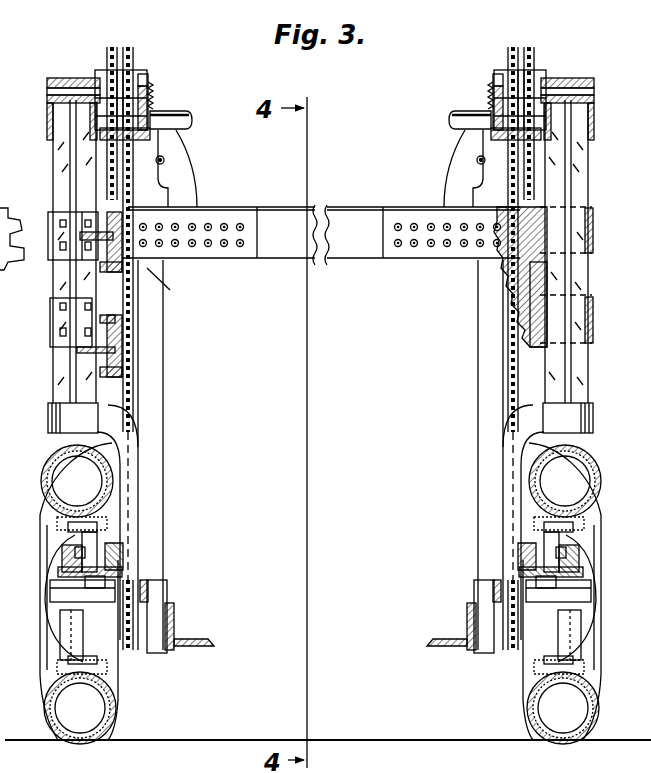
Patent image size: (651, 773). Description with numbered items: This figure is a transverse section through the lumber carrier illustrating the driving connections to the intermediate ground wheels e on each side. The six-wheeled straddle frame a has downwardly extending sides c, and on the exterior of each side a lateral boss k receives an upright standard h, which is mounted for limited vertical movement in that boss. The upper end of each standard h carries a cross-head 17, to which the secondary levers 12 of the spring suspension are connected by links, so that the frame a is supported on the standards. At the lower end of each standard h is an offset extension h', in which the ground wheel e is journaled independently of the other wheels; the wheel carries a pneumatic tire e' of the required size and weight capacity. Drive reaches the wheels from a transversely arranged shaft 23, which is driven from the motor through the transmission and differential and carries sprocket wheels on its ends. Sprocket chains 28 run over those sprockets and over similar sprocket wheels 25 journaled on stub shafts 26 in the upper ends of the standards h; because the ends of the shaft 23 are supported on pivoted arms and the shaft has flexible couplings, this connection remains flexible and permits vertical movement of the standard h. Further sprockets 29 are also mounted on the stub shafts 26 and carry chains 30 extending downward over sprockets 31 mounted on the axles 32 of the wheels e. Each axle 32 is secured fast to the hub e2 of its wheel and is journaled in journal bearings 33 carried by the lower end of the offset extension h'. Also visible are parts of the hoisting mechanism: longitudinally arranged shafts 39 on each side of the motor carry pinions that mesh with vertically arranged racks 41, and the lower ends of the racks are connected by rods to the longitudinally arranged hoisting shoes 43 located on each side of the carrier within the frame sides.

The secondary lever 12 is at (22, 226).
The cross-head 17 is at (48, 97).
The transversely arranged shaft 23 is at (172, 118).
The sprocket wheel 25 is at (106, 63).
The stub shaft 26 is at (147, 77).
The sprocket chain 28 is at (118, 138).
The sprocket 29 is at (136, 52).
The chain 30 is at (137, 392).
The sprocket 31 is at (125, 577).
The axle 32 is at (62, 592).
The journal bearing 33 is at (97, 623).
The longitudinally arranged shaft 39 is at (165, 160).
The vertically arranged rack 41 is at (155, 90).
The hoisting shoe 43 is at (176, 626).
The straddle frame a is at (288, 250).
The downwardly extending side c is at (130, 320).
The upright standard h is at (312, 266).
The offset extension h' is at (320, 522).
The lateral boss k is at (55, 255).
The ground wheel e is at (313, 591).
The pneumatic tire e' is at (304, 700).
The hub e2 is at (46, 620).